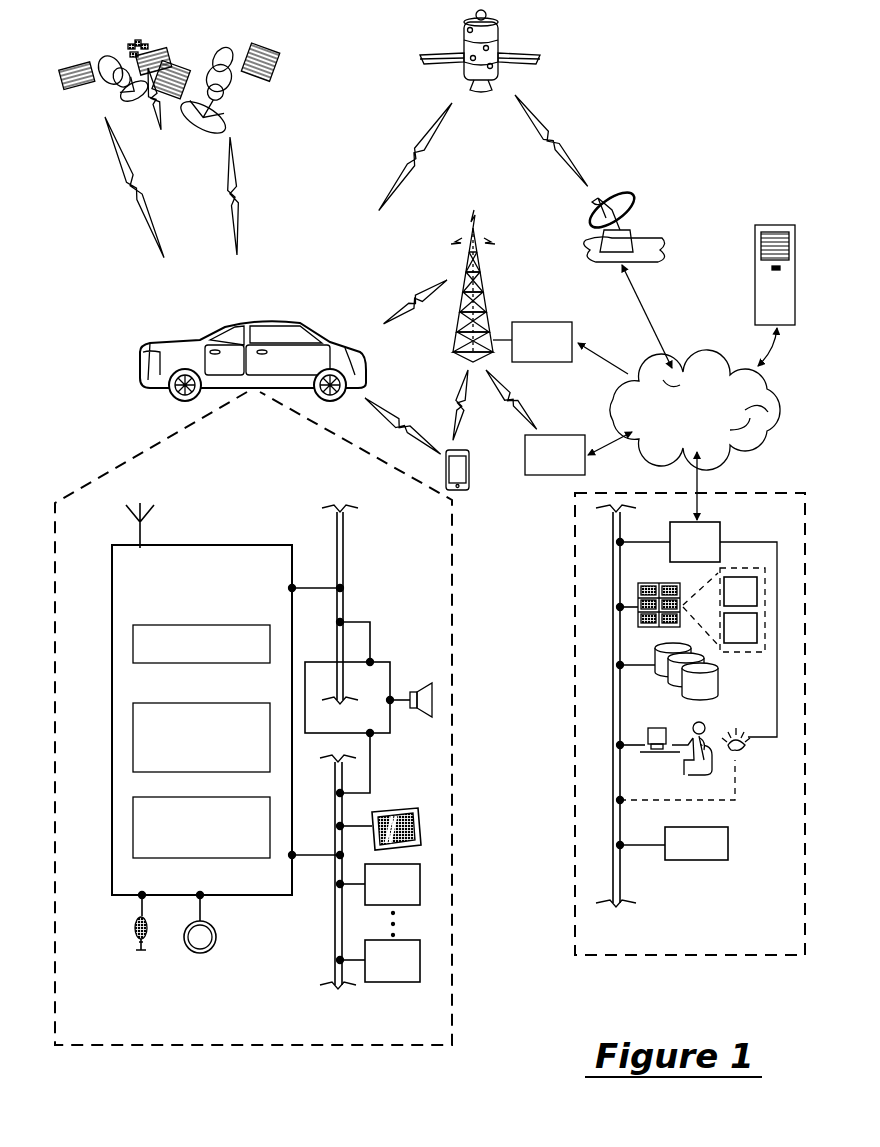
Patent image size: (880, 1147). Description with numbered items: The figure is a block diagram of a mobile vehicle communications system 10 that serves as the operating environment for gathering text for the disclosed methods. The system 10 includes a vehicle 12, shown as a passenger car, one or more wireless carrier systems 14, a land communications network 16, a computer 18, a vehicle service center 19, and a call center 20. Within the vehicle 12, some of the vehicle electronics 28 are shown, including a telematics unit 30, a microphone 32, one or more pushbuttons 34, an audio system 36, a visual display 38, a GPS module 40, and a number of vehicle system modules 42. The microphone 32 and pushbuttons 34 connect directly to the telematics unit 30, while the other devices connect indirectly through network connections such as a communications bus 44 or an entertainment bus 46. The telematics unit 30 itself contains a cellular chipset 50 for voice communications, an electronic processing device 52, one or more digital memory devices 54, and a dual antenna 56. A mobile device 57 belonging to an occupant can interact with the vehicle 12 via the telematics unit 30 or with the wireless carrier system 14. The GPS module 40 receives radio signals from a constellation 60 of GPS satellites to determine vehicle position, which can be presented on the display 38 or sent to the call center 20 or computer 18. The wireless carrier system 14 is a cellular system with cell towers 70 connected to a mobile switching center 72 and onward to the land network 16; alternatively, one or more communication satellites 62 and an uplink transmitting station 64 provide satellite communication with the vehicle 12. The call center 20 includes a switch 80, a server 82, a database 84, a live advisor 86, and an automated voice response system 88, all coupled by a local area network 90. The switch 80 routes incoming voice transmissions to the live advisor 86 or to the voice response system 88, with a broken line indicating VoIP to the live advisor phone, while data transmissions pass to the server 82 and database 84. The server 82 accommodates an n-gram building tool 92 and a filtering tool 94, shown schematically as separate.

The mobile vehicle communications system 10 is at (724, 52).
The vehicle 12 is at (138, 368).
The wireless carrier system 14 is at (446, 330).
The land communications network 16 is at (785, 405).
The computer 18 is at (800, 288).
The vehicle service center 19 is at (555, 455).
The call center 20 is at (680, 958).
The vehicle electronics 28 is at (250, 1050).
The telematics unit 30 is at (252, 543).
The microphone 32 is at (132, 935).
The pushbuttons 34 is at (217, 937).
The audio system 36 is at (380, 660).
The visual display 38 is at (392, 810).
The GPS module 40 is at (420, 885).
The vehicle system modules 42 is at (380, 983).
The communications bus 44 is at (330, 922).
The entertainment bus 46 is at (345, 568).
The cellular chipset 50 is at (201, 644).
The electronic processing device 52 is at (201, 737).
The digital memory devices 54 is at (201, 827).
The dual antenna 56 is at (138, 533).
The mobile device 57 is at (466, 476).
The constellation of GPS satellites 60 is at (293, 102).
The communication satellite 62 is at (497, 34).
The uplink transmitting station 64 is at (645, 232).
The cell tower 70 is at (490, 292).
The mobile switching center 72 is at (542, 342).
The switch 80 is at (669, 542).
The server 82 is at (667, 580).
The database 84 is at (722, 676).
The live advisor 86 is at (676, 760).
The automated voice response system 88 is at (735, 840).
The local area network 90 is at (620, 885).
The n-gram building tool 92 is at (740, 591).
The filtering tool 94 is at (740, 628).